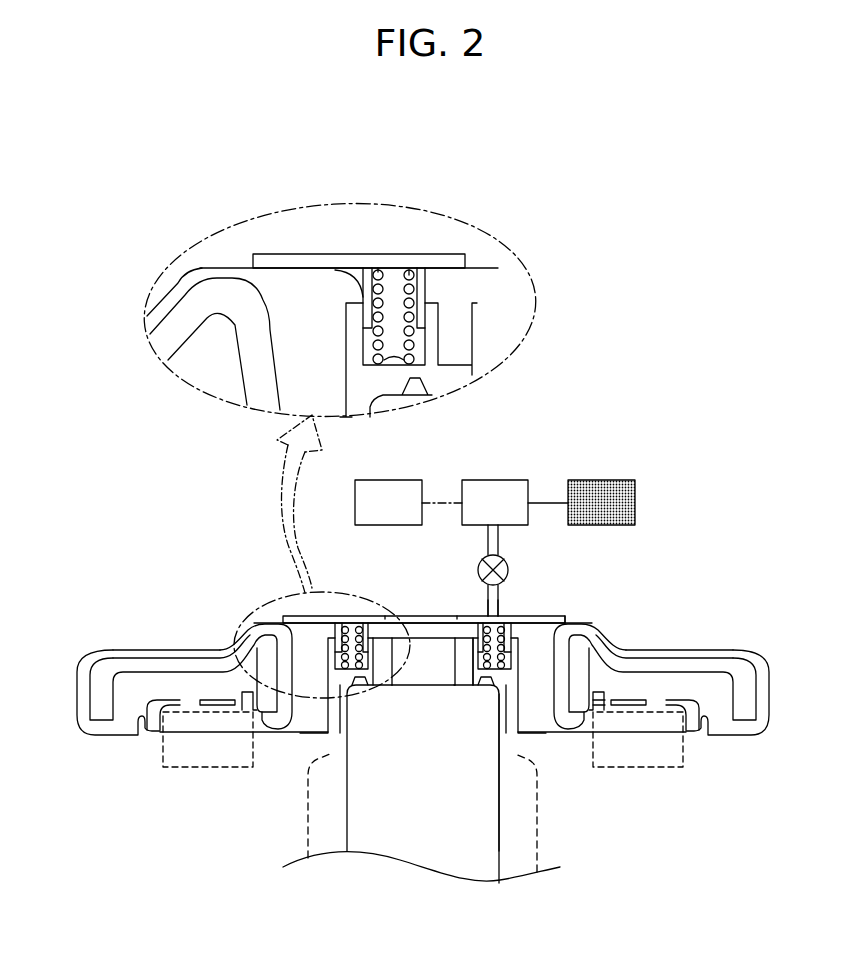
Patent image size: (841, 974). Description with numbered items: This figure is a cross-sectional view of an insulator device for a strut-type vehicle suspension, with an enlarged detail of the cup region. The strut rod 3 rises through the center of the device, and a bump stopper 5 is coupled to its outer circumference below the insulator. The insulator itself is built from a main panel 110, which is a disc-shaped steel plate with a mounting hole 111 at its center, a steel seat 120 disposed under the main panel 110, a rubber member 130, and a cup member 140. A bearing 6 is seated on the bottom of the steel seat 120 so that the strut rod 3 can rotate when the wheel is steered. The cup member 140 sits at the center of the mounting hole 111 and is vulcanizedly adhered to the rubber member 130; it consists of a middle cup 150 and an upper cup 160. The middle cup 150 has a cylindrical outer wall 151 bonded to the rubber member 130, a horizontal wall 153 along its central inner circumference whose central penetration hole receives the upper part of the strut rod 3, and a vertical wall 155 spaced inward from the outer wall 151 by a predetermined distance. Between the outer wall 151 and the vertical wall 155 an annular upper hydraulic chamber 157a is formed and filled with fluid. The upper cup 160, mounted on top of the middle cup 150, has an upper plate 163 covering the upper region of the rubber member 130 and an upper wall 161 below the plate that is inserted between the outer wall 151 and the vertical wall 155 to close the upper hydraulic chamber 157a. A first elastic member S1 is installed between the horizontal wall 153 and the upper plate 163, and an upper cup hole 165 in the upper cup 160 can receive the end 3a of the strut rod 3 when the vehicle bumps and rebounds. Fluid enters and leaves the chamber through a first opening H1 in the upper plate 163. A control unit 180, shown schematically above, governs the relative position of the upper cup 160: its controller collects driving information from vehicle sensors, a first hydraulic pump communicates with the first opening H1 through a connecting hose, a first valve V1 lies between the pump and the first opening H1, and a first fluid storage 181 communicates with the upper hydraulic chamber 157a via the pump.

The strut rod 3 is at (398, 836).
The end of the strut rod 3a is at (377, 645).
The bump stopper 5 is at (300, 841).
The bearing 6 is at (160, 756).
The main panel 110 is at (158, 349).
The mounting hole 111 is at (560, 618).
The steel seat 120 is at (697, 707).
The rubber member 130 is at (185, 278).
The cup member 140 is at (158, 832).
The middle cup 150 is at (323, 710).
The outer wall 151 is at (360, 375).
The horizontal wall 153 is at (455, 372).
The vertical wall 155 is at (438, 325).
The upper hydraulic chamber 157a is at (392, 287).
The upper cup 160 is at (281, 612).
The upper wall 161 is at (425, 290).
The upper plate 163 is at (272, 257).
The upper cup hole 165 is at (403, 614).
The control unit 180 is at (645, 489).
The first fluid storage 181 is at (613, 480).
The first elastic member S1 is at (410, 274).
The first valve V1 is at (478, 566).
The first opening H1 is at (488, 612).